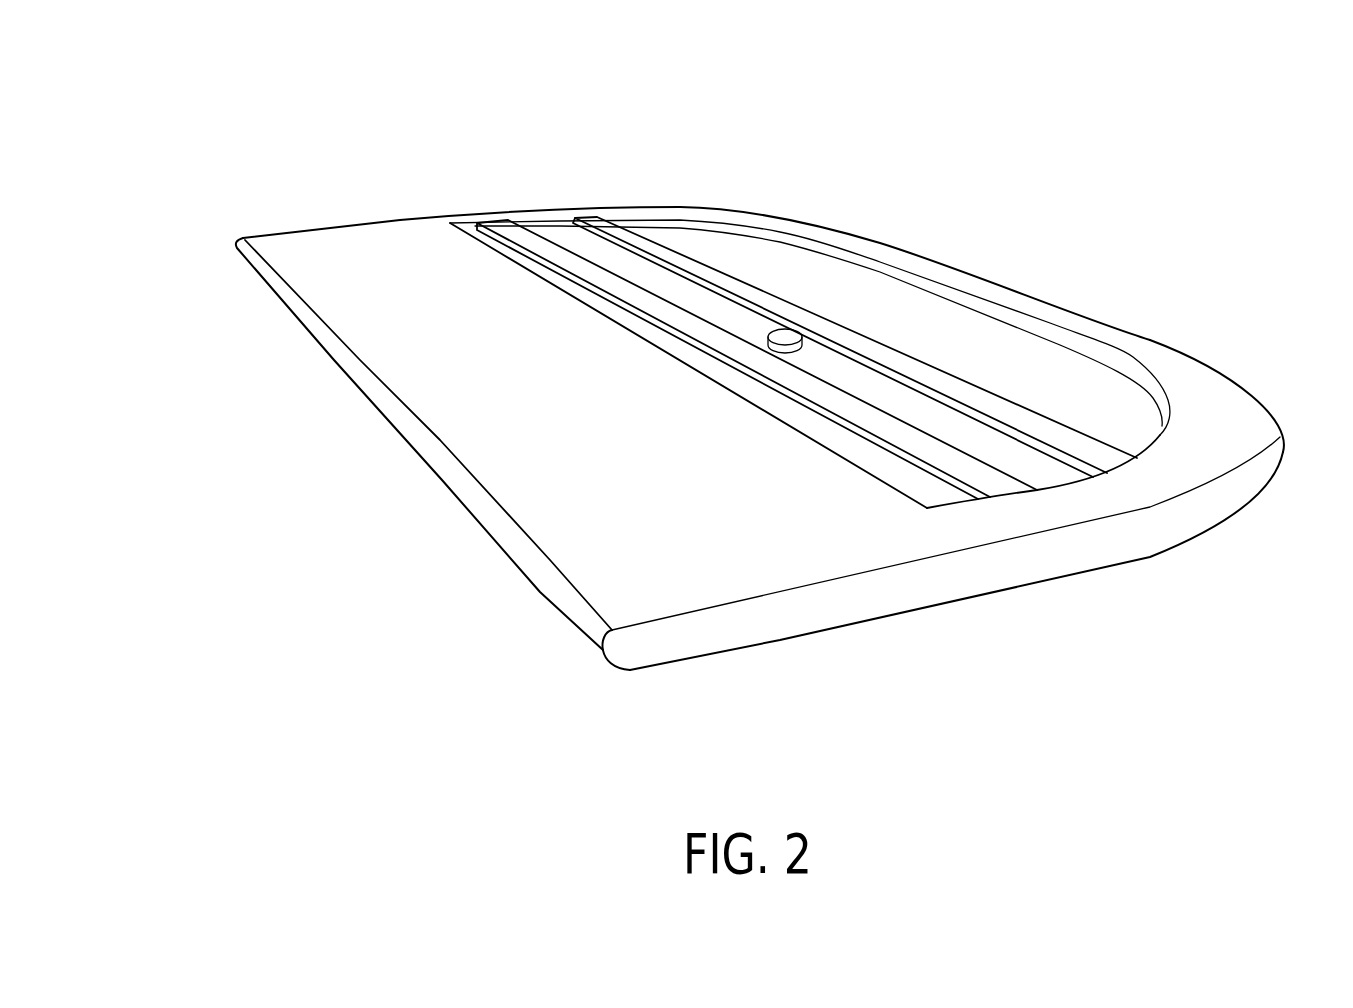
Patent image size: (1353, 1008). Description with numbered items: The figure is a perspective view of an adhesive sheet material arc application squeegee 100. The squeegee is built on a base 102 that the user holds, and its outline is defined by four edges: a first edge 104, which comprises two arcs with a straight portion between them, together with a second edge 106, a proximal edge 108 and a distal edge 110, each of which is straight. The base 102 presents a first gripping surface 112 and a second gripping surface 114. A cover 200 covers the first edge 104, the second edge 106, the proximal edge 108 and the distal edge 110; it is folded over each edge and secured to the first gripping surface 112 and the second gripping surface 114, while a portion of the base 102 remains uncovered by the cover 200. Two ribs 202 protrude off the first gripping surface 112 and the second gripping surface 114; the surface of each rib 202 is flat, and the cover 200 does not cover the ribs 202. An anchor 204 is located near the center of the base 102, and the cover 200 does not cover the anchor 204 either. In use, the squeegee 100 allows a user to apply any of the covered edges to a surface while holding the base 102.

The adhesive sheet material arc application squeegee 100 is at (729, 391).
The base 102 is at (702, 243).
The first edge 104 is at (1065, 298).
The second edge 106 is at (388, 400).
The proximal edge 108 is at (690, 643).
The distal edge 110 is at (415, 218).
The first gripping surface 112 is at (1143, 437).
The second gripping surface 114 is at (885, 620).
The cover 200 is at (1175, 475).
The ribs 202 is at (507, 224).
The anchor 204 is at (786, 330).